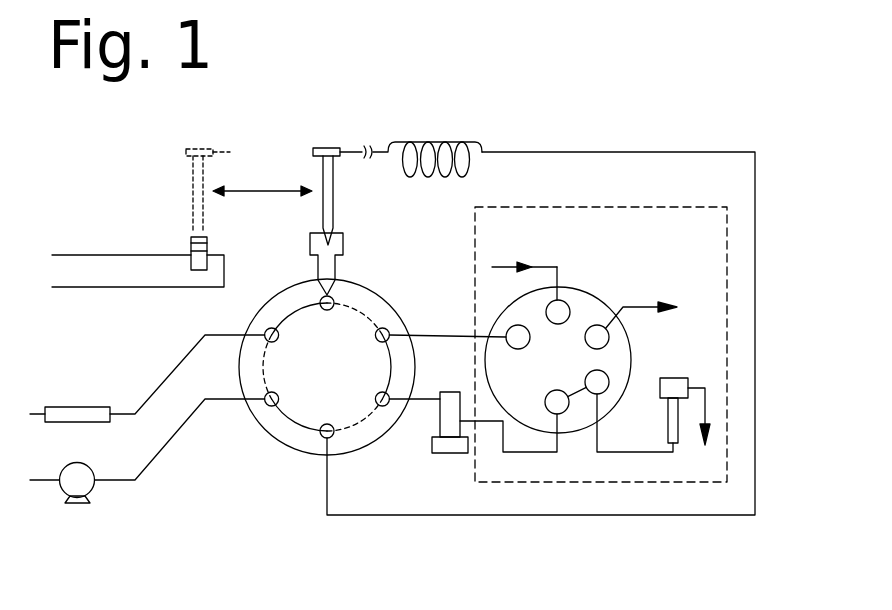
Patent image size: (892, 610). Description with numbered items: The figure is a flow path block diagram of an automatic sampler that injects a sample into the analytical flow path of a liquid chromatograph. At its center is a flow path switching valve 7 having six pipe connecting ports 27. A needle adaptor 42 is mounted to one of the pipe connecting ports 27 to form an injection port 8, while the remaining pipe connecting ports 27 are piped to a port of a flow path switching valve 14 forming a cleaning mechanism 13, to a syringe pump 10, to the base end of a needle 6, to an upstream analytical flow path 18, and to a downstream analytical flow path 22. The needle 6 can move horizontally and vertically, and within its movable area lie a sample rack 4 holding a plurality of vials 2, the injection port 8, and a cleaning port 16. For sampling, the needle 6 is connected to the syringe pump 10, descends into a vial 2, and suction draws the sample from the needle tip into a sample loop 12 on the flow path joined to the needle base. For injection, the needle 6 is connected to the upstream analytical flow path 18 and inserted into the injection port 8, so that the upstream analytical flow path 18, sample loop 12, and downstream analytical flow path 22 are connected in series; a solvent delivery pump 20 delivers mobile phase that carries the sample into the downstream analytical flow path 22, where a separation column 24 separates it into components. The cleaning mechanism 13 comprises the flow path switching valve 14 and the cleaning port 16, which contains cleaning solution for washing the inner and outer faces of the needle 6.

The vial 2 is at (191, 238).
The sample rack 4 is at (128, 267).
The needle 6 is at (205, 173).
The flow path switching valve 7 is at (300, 454).
The injection port 8 is at (336, 358).
The syringe pump 10 is at (448, 455).
The sample loop 12 is at (437, 140).
The cleaning mechanism 13 is at (601, 391).
The flow path switching valve 14 is at (590, 292).
The cleaning port 16 is at (672, 385).
The upstream analytical flow path 18 is at (165, 452).
The solvent delivery pump 20 is at (78, 507).
The downstream analytical flow path 22 is at (168, 378).
The separation column 24 is at (63, 407).
The pipe connecting port 27 is at (333, 300).
The needle adaptor 42 is at (330, 272).